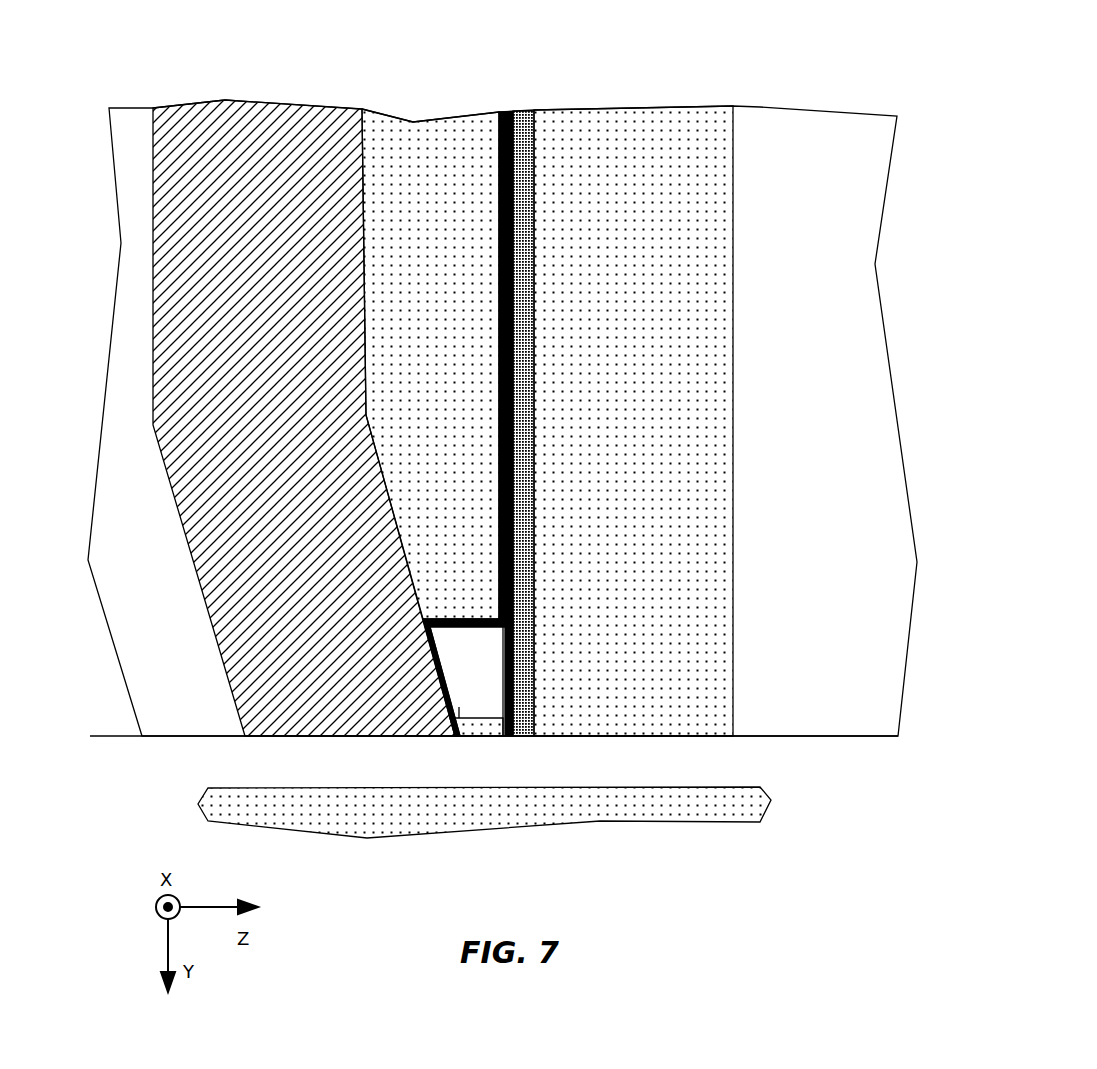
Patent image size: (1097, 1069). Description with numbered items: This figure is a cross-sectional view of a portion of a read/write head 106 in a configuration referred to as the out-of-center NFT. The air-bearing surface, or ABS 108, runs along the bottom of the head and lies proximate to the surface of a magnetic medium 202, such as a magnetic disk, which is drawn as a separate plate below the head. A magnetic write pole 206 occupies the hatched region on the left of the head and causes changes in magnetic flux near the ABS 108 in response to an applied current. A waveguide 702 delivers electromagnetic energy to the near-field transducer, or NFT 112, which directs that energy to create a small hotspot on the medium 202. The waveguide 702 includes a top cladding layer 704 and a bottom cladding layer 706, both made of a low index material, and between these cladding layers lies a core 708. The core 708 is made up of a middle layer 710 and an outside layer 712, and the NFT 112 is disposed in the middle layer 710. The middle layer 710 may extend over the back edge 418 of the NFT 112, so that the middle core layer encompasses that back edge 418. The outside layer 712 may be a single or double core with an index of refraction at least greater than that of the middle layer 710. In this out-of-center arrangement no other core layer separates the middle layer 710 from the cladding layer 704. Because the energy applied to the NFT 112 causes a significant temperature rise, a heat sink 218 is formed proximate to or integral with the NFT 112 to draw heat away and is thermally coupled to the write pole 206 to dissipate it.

The read/write head 106 is at (800, 50).
The ABS 108 is at (110, 737).
The NFT 112 is at (503, 737).
The magnetic medium 202 is at (263, 812).
The magnetic write pole 206 is at (282, 102).
The heat sink 218 is at (458, 737).
The back edge 418 is at (508, 623).
The waveguide 702 is at (550, 368).
The top cladding layer 704 is at (448, 118).
The bottom cladding layer 706 is at (633, 408).
The core 708 is at (549, 384).
The middle layer 710 is at (508, 112).
The outside layer 712 is at (533, 110).